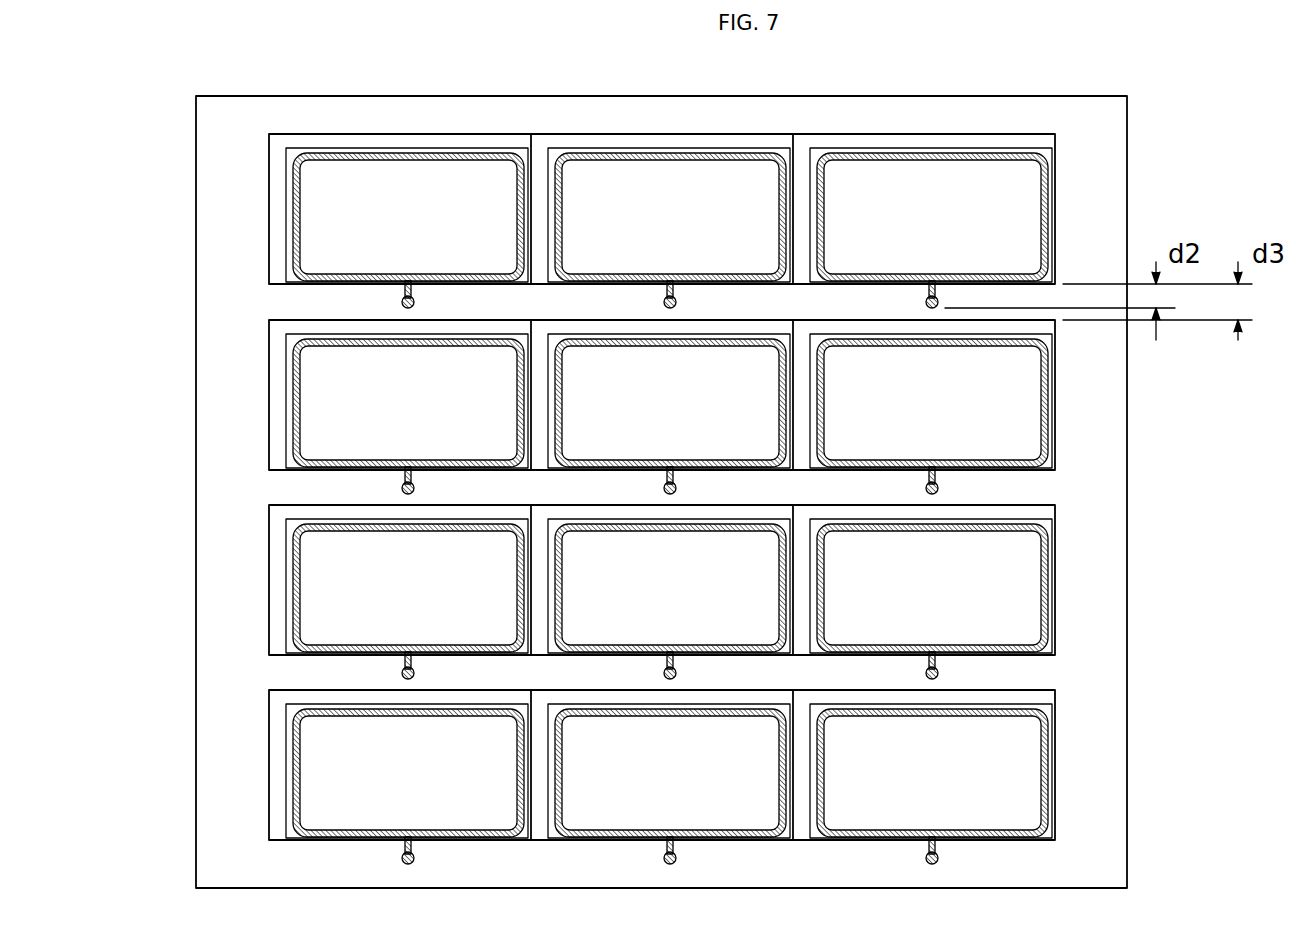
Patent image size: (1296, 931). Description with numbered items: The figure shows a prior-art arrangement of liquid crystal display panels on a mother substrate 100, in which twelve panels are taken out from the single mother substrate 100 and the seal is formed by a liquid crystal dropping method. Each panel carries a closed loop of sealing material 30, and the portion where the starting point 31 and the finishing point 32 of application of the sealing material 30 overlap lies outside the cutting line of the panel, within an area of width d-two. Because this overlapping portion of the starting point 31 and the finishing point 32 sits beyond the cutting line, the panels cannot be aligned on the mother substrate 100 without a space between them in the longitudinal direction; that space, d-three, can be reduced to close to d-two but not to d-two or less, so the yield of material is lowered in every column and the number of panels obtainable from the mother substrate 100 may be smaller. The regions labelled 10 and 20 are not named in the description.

The mother substrate 100 is at (876, 96).
The pixel 10 is at (327, 133).
The pixel electrode frame 20 is at (425, 148).
The sealing material 30 is at (293, 202).
The starting point 31 is at (245, 295).
The finishing point 32 is at (402, 303).